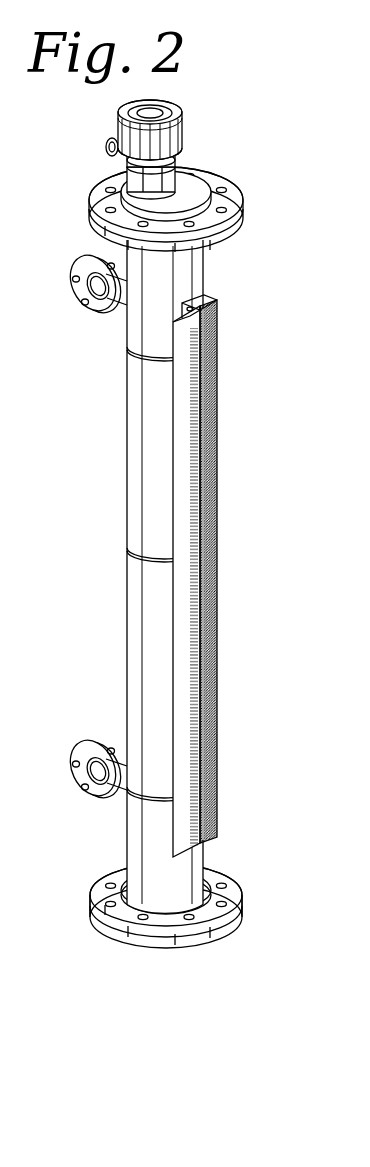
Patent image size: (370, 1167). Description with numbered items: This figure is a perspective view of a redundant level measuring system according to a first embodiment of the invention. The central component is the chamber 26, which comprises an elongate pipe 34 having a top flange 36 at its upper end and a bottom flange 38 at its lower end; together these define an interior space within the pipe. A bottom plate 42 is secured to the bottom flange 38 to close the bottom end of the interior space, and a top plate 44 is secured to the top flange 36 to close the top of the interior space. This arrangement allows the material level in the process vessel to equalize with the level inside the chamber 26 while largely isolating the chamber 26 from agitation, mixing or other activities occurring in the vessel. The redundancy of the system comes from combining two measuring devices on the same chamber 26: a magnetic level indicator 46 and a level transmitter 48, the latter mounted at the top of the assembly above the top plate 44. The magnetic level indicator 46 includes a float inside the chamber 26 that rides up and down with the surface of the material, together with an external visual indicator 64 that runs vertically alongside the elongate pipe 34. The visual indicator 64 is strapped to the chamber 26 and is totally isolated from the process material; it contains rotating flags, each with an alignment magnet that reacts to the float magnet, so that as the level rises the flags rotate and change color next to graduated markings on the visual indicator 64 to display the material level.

The chamber 26 is at (222, 281).
The elongate pipe 34 is at (140, 410).
The top flange 36 is at (241, 230).
The bottom flange 38 is at (233, 892).
The bottom plate 42 is at (220, 933).
The top plate 44 is at (227, 197).
The magnetic level indicator 46 is at (232, 538).
The level transmitter 48 is at (197, 113).
The external visual indicator 64 is at (220, 636).